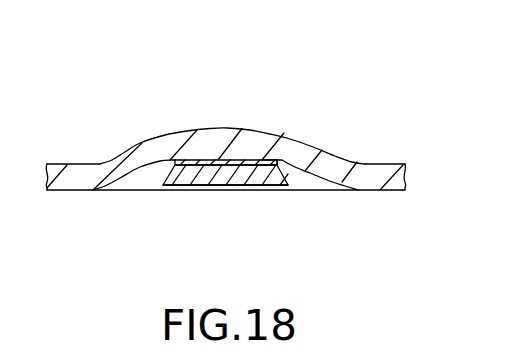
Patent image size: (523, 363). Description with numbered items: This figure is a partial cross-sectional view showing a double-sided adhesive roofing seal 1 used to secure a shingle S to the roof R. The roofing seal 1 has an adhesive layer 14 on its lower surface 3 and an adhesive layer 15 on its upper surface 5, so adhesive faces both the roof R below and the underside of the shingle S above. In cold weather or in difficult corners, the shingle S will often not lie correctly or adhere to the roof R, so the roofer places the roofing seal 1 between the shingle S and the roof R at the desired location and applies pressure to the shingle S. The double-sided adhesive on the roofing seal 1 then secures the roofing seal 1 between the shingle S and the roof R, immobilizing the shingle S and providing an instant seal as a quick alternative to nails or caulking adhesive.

The roofing seal 1 is at (234, 126).
The lower surface 3 is at (270, 186).
The upper surface 5 is at (249, 160).
The adhesive layer 14 is at (252, 186).
The adhesive layer 15 is at (270, 160).
The shingle S is at (405, 179).
The roof R is at (317, 191).